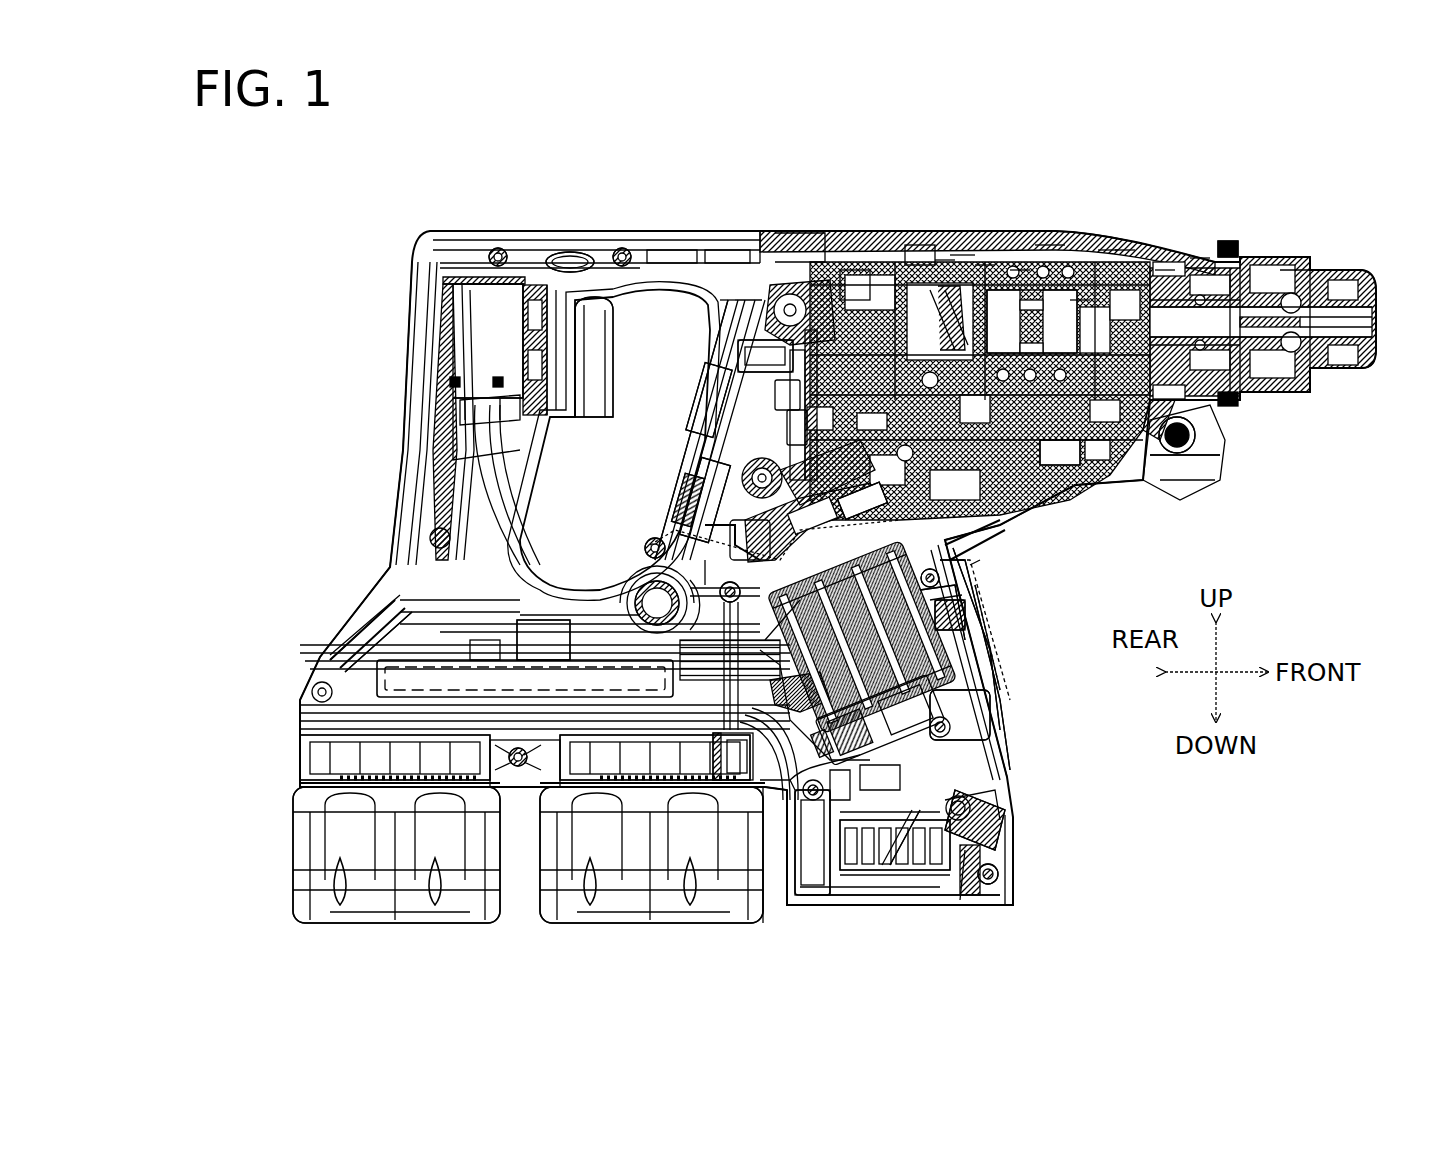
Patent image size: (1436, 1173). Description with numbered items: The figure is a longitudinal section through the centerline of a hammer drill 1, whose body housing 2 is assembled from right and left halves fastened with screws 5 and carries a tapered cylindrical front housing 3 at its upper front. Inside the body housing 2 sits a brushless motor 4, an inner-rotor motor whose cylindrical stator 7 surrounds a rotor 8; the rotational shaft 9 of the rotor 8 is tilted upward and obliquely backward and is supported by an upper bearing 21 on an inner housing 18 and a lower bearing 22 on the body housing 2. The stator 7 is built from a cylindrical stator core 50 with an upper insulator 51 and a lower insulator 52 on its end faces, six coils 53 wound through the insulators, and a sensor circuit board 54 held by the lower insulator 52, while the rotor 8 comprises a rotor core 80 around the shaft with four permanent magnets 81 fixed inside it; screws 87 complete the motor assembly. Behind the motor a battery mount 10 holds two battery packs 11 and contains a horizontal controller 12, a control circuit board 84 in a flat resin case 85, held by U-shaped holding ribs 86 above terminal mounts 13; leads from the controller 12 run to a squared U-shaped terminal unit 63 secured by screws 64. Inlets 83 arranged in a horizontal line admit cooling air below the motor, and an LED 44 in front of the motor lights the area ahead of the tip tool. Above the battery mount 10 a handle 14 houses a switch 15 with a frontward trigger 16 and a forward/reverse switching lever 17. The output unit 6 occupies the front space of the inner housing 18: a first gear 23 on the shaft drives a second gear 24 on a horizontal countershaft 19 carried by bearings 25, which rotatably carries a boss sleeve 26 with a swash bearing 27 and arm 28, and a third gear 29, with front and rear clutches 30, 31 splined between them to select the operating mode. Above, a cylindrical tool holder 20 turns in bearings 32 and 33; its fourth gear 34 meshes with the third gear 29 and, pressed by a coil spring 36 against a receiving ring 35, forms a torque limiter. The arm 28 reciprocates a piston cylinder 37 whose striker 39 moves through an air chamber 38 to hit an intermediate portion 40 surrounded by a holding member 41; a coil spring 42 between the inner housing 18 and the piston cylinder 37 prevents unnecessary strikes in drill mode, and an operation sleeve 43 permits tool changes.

The hammer drill 1 is at (1075, 180).
The body housing 2 is at (727, 231).
The front housing 3 is at (900, 233).
The brushless motor 4 is at (985, 665).
The screws 5 is at (500, 250).
The output unit 6 is at (1003, 310).
The stator 7 is at (990, 645).
The rotor 8 is at (960, 565).
The rotational shaft 9 is at (685, 470).
The battery mount 10 is at (355, 650).
The battery packs 11 is at (373, 928).
The controller 12 is at (545, 618).
The terminal mounts 13 is at (335, 750).
The handle 14 is at (420, 445).
The switch 15 is at (455, 300).
The trigger 16 is at (573, 333).
The forward/reverse switching lever 17 is at (570, 252).
The inner housing 18 is at (800, 233).
The countershaft 19 is at (1110, 490).
The tool holder 20 is at (1080, 300).
The upper bearing 21 is at (690, 445).
The lower bearing 22 is at (990, 720).
The first gear 23 is at (730, 365).
The second gear 24 is at (740, 340).
The bearings 25 is at (720, 315).
The boss sleeve 26 is at (990, 520).
The swash bearing 27 is at (955, 530).
The arm 28 is at (920, 245).
The third gear 29 is at (1150, 470).
The front clutch 30 is at (1045, 480).
The rear clutch 31 is at (1040, 500).
The bearing 32 is at (960, 255).
The bearing 33 is at (1228, 241).
The fourth gear 34 is at (1108, 250).
The receiving ring 35 is at (1125, 250).
The coil spring 36 is at (1050, 245).
The piston cylinder 37 is at (945, 260).
The air chamber 38 is at (985, 265).
The striker 39 is at (1020, 270).
The intermediate portion 40 is at (1200, 258).
The holding member 41 is at (1165, 270).
The coil spring 42 is at (855, 270).
The operation sleeve 43 is at (1300, 268).
The light (LED) 44 is at (1010, 605).
The stator core 50 is at (965, 585).
The upper insulator 51 is at (680, 520).
The lower insulator 52 is at (950, 695).
The coils 53 is at (780, 628).
The sensor circuit board 54 is at (820, 905).
The terminal unit 63 is at (775, 825).
The screws 64 is at (805, 890).
The rotor core 80 is at (838, 900).
The permanent magnets 81 is at (875, 895).
The inlets 83 is at (905, 905).
The control circuit board 84 is at (390, 640).
The resin case 85 is at (375, 612).
The holding ribs 86 is at (630, 600).
The screws 87 is at (985, 700).